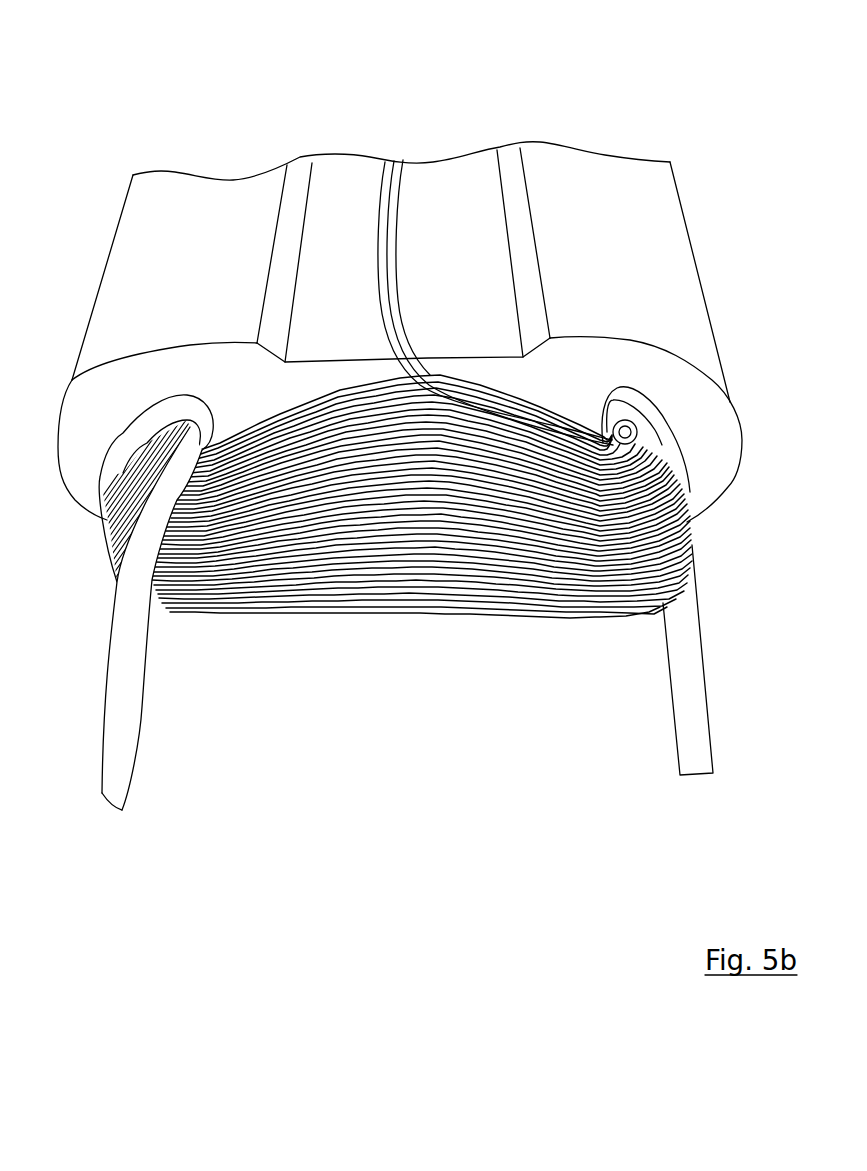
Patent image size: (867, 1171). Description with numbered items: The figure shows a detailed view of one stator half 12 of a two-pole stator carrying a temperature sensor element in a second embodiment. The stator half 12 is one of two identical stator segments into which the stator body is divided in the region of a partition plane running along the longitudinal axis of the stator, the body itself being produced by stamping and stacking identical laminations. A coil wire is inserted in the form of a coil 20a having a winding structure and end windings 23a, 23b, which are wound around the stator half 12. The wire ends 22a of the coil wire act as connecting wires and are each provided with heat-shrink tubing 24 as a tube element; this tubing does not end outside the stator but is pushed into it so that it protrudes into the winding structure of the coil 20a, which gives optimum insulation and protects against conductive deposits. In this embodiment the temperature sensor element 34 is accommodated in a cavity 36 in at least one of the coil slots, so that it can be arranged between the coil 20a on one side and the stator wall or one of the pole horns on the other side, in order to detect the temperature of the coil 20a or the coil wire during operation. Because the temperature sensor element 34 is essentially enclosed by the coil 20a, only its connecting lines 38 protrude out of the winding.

The stator half 12 is at (153, 139).
The connecting lines 38 is at (378, 193).
The temperature sensor element 34 is at (650, 422).
The cavity 36 is at (677, 455).
The heat-shrink tubing 24 is at (130, 662).
The wire end 22a is at (157, 727).
The coil 20a is at (519, 623).
The end winding 23a is at (397, 580).
The end winding 23b is at (422, 558).